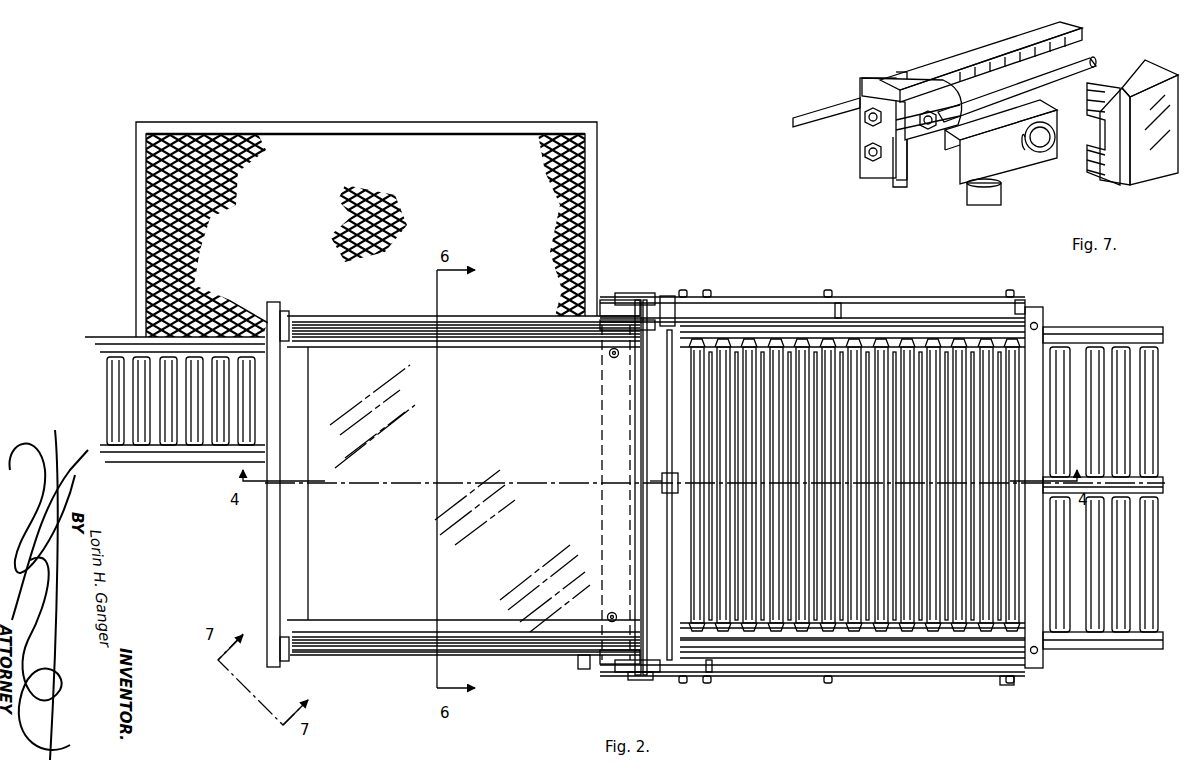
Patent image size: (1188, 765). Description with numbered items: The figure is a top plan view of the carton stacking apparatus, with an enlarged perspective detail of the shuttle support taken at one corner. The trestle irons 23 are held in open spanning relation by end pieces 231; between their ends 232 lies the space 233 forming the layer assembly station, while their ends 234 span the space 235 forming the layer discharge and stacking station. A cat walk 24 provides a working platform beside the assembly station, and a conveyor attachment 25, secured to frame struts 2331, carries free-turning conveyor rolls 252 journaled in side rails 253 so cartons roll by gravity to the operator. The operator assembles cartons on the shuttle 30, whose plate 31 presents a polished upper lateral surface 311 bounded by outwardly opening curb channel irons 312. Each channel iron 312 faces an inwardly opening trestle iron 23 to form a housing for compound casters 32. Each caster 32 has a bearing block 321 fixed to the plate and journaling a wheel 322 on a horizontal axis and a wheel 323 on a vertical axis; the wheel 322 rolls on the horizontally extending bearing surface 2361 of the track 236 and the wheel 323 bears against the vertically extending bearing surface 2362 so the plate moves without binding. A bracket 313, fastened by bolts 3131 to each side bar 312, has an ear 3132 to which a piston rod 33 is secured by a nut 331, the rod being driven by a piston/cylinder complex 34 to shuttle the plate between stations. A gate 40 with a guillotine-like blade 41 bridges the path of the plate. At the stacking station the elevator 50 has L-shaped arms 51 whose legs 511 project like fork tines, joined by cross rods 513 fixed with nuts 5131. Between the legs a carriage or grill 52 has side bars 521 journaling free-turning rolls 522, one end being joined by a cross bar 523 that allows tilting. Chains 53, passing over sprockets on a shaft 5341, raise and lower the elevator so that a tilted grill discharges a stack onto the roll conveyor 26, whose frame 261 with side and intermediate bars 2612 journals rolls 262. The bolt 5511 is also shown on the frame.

In FIG. 2, the trestle irons 23 is at (644, 496).
In FIG. 7, the trestle irons 23 is at (1112, 123).
In FIG. 2, the end pieces 231 is at (602, 432).
In FIG. 2, the ends of the trestle irons 232 is at (322, 662).
In FIG. 2, the space 233 is at (302, 540).
In FIG. 2, the ends of the trestle irons 234 is at (990, 645).
In FIG. 2, the space 235 is at (890, 600).
In FIG. 7, the track 236 is at (1106, 123).
In FIG. 7, the horizontally extending bearing surface 2361 is at (1110, 130).
In FIG. 7, the vertically extending bearing surface 2362 is at (1076, 177).
In FIG. 2, the frame struts 2331 is at (286, 318).
In FIG. 2, the cat walk 24 is at (455, 128).
In FIG. 2, the conveyor attachment 25 is at (155, 394).
In FIG. 2, the conveyor rolls 252 is at (142, 408).
In FIG. 2, the side rails 253 is at (180, 455).
In FIG. 2, the roll conveyor 26 is at (1101, 507).
In FIG. 2, the frame 261 is at (1101, 491).
In FIG. 2, the side and intermediate bars 2612 is at (1088, 330).
In FIG. 2, the rolls 262 is at (1122, 375).
In FIG. 2, the shuttle 30 is at (431, 490).
In FIG. 7, the shuttle 30 is at (938, 134).
In FIG. 2, the plate 31 is at (322, 556).
In FIG. 7, the plate 31 is at (828, 123).
In FIG. 2, the upper lateral surface 311 is at (452, 598).
In FIG. 2, the channel irons 312 is at (490, 345).
In FIG. 7, the channel irons 312 is at (922, 72).
In FIG. 7, the bracket 313 is at (868, 121).
In FIG. 7, the bolts 3131 is at (866, 120).
In FIG. 7, the ear 3132 is at (890, 100).
In FIG. 7, the compound casters 32 is at (952, 182).
In FIG. 2, the bearing block 321 is at (327, 332).
In FIG. 7, the bearing block 321 is at (985, 155).
In FIG. 7, the wheel 322 is at (1030, 158).
In FIG. 7, the wheel 323 is at (984, 200).
In FIG. 2, the piston rod 33 is at (524, 325).
In FIG. 7, the piston rod 33 is at (1082, 70).
In FIG. 7, the nut 331 is at (895, 185).
In FIG. 2, the piston/cylinder complex 34 is at (728, 325).
In FIG. 2, the gate 40 is at (668, 443).
In FIG. 2, the blade 41 is at (672, 460).
In FIG. 2, the elevator 50 is at (822, 499).
In FIG. 2, the L-shaped arms 51 is at (796, 300).
In FIG. 2, the leg 511 is at (915, 302).
In FIG. 2, the cross rods 513 is at (841, 305).
In FIG. 2, the nuts 5131 is at (832, 292).
In FIG. 2, the carriage or grill 52 is at (852, 495).
In FIG. 2, the side bars 521 is at (885, 600).
In FIG. 2, the rolls 522 is at (985, 362).
In FIG. 2, the cross bar 523 is at (1008, 686).
In FIG. 2, the chain 53 is at (632, 302).
In FIG. 2, the shaft 5341 is at (645, 405).
In FIG. 2, the bolt 5511 is at (607, 357).